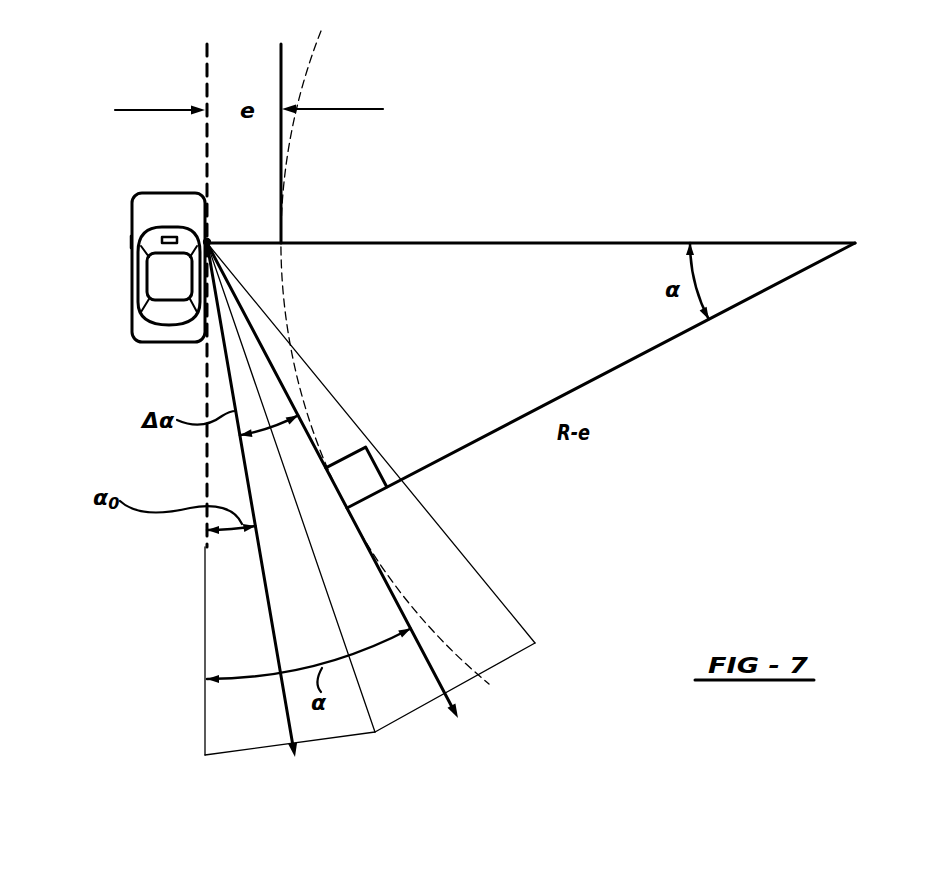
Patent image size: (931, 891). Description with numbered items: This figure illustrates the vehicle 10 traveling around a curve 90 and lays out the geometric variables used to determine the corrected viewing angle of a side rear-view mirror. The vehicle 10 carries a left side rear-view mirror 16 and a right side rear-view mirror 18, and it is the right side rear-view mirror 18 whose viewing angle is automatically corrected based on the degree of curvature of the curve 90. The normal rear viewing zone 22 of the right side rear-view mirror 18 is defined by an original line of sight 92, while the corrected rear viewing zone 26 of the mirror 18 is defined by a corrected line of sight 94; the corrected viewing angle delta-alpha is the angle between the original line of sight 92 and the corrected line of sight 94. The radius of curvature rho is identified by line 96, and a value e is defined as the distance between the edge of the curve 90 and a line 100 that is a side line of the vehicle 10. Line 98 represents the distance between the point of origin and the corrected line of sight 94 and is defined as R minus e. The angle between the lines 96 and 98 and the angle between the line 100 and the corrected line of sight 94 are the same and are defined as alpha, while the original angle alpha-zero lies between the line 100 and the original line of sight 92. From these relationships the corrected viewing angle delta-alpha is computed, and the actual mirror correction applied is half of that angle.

The vehicle 10 is at (166, 193).
The left side rear-view mirror 16 is at (126, 242).
The right side rear-view mirror 18 is at (211, 239).
The normal rear viewing zone 22 is at (205, 660).
The corrected rear viewing zone 26 is at (450, 540).
The curve 90 is at (290, 135).
The original line of sight 92 is at (272, 610).
The corrected line of sight 94 is at (426, 660).
The radius of curvature line 96 is at (517, 243).
The R minus e distance line 98 is at (623, 366).
The side line of the vehicle 100 is at (205, 72).